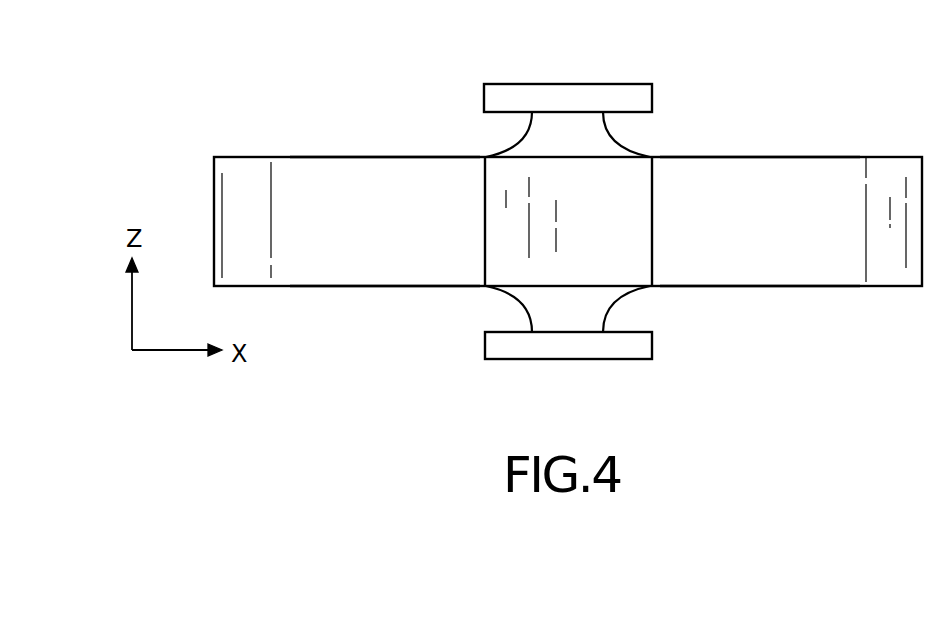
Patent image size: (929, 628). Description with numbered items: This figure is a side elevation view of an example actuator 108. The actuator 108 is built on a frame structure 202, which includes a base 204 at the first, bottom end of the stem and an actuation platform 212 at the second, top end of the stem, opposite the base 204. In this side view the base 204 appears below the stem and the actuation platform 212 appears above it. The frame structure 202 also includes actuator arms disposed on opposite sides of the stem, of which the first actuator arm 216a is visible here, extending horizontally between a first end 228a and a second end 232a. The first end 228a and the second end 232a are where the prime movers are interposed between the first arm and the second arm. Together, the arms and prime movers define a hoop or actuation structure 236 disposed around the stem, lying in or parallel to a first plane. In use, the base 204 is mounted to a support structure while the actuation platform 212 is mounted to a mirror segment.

The actuator 108 is at (363, 147).
The actuation platform 212 is at (588, 85).
The base 204 is at (610, 360).
The first actuator arm 216a is at (365, 273).
The first end of the first actuator arm 228a is at (235, 200).
The second end of the first actuator arm 232a is at (886, 287).
The hoop or actuation structure 236 is at (774, 185).
The frame structure 202 is at (785, 0).